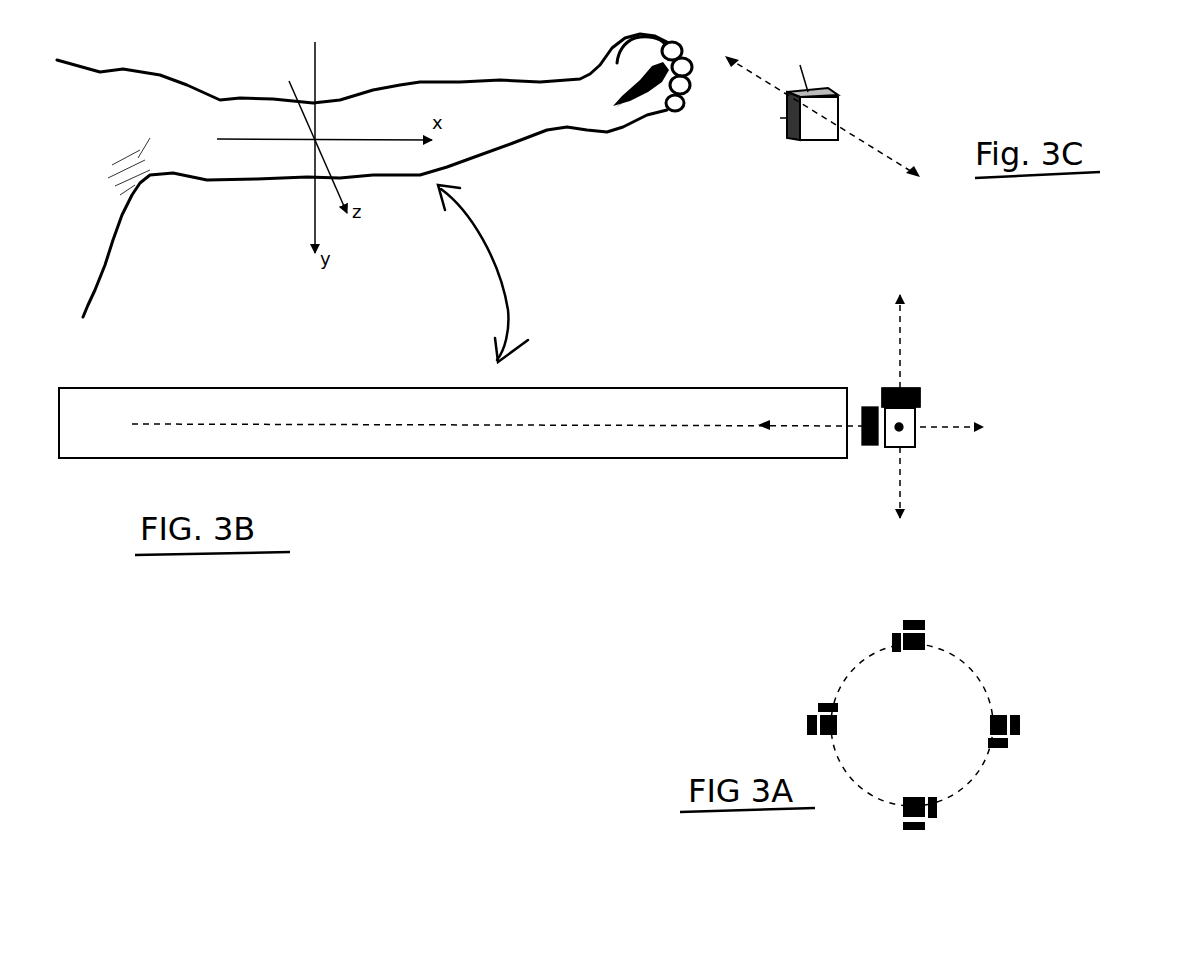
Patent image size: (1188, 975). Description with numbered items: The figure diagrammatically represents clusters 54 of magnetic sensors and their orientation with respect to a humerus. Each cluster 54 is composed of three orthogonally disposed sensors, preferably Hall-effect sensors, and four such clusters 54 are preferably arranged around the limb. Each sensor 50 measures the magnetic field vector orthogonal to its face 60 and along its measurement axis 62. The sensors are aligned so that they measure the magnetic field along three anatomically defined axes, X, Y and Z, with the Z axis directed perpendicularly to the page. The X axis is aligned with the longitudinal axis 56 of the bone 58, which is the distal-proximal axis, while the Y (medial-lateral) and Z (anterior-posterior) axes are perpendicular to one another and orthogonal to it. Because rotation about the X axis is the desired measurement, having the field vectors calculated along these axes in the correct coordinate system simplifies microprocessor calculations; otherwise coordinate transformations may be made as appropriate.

In FIG. 3A, the sensor 50 is at (1000, 715).
In FIG. 3B, the sensor 50 is at (872, 443).
In FIG. 3C, the sensor 50 is at (808, 135).
In FIG. 3A, the cluster 54 is at (1037, 728).
In FIG. 3B, the cluster 54 is at (935, 398).
In FIG. 3B, the longitudinal axis 56 is at (407, 425).
In FIG. 3B, the bone 58 is at (533, 458).
In FIG. 3C, the face 60 is at (833, 115).
In FIG. 3C, the measurement axis 62 is at (868, 147).